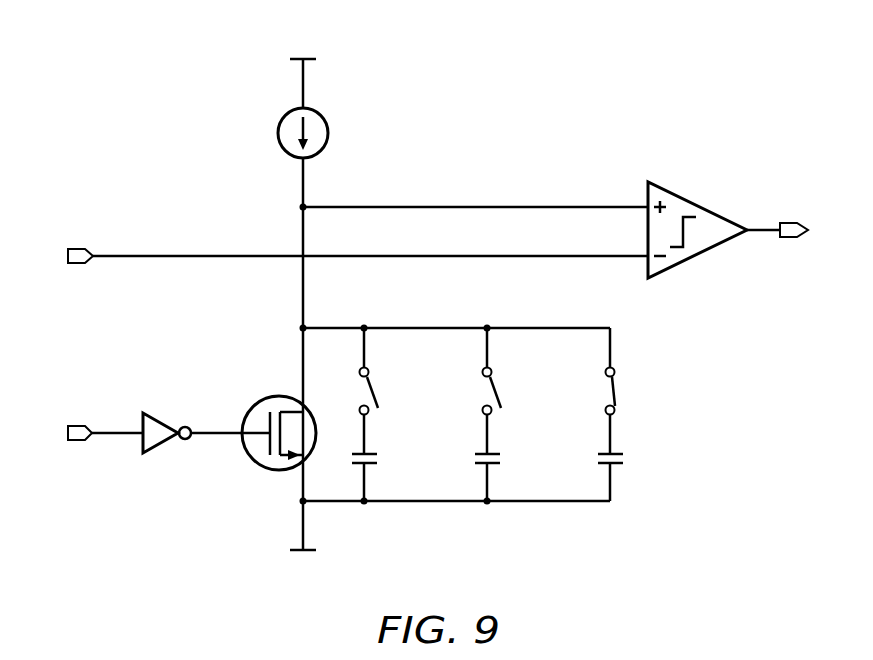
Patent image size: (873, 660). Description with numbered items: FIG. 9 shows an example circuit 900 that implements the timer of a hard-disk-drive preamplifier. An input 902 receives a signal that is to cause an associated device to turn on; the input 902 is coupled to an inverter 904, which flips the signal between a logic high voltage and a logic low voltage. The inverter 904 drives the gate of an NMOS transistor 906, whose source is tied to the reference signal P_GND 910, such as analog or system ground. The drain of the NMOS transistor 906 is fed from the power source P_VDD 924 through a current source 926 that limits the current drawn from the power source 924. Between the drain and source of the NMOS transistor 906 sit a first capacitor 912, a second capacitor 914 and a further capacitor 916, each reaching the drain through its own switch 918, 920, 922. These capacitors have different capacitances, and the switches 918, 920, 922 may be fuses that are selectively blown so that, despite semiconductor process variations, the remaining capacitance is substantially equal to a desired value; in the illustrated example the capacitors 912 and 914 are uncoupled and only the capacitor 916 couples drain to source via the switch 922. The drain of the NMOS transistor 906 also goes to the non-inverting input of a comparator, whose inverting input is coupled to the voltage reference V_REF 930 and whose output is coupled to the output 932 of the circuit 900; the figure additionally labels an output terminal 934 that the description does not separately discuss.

The circuit 900 is at (530, 85).
The input 902 is at (70, 441).
The inverter 904 is at (163, 424).
The NMOS transistor 906 is at (253, 460).
The reference signal P_GND 910 is at (305, 518).
The first capacitor 912 is at (378, 459).
The second capacitor 914 is at (501, 459).
The capacitor 916 is at (624, 459).
The switch 918 is at (374, 392).
The first switch 920 is at (497, 392).
The second switch 922 is at (616, 391).
The power source P_VDD 924 is at (302, 85).
The current source 926 is at (327, 129).
The voltage reference V_REF 930 is at (688, 201).
The output 932 is at (68, 248).
The output terminal 934 is at (789, 222).